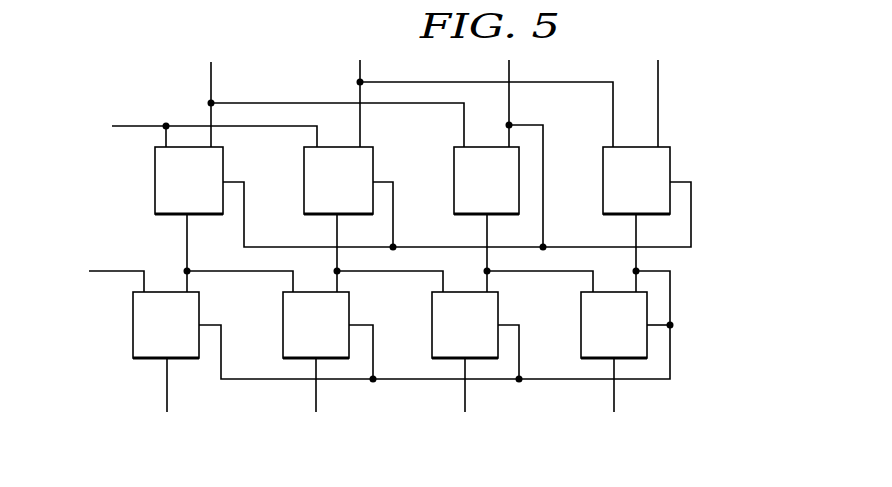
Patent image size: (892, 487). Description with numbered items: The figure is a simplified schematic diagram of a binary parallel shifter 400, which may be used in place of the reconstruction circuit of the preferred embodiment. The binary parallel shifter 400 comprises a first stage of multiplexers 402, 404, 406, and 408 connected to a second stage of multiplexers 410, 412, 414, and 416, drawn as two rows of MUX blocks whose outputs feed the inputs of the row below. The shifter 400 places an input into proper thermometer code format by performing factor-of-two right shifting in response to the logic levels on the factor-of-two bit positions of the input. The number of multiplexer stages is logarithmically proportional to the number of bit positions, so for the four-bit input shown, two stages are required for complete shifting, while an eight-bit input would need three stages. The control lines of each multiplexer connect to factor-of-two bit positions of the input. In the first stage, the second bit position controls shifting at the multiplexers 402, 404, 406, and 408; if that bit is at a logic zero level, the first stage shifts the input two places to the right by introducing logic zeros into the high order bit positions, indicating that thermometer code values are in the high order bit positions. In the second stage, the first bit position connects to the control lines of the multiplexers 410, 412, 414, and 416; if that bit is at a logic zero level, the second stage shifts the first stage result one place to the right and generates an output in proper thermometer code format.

The binary parallel shifter 400 is at (132, 383).
The multiplexer 402 is at (223, 167).
The multiplexer 404 is at (373, 167).
The multiplexer 406 is at (519, 167).
The multiplexer 408 is at (670, 167).
The multiplexer 410 is at (133, 312).
The multiplexer 412 is at (283, 312).
The multiplexer 414 is at (432, 312).
The multiplexer 416 is at (581, 312).